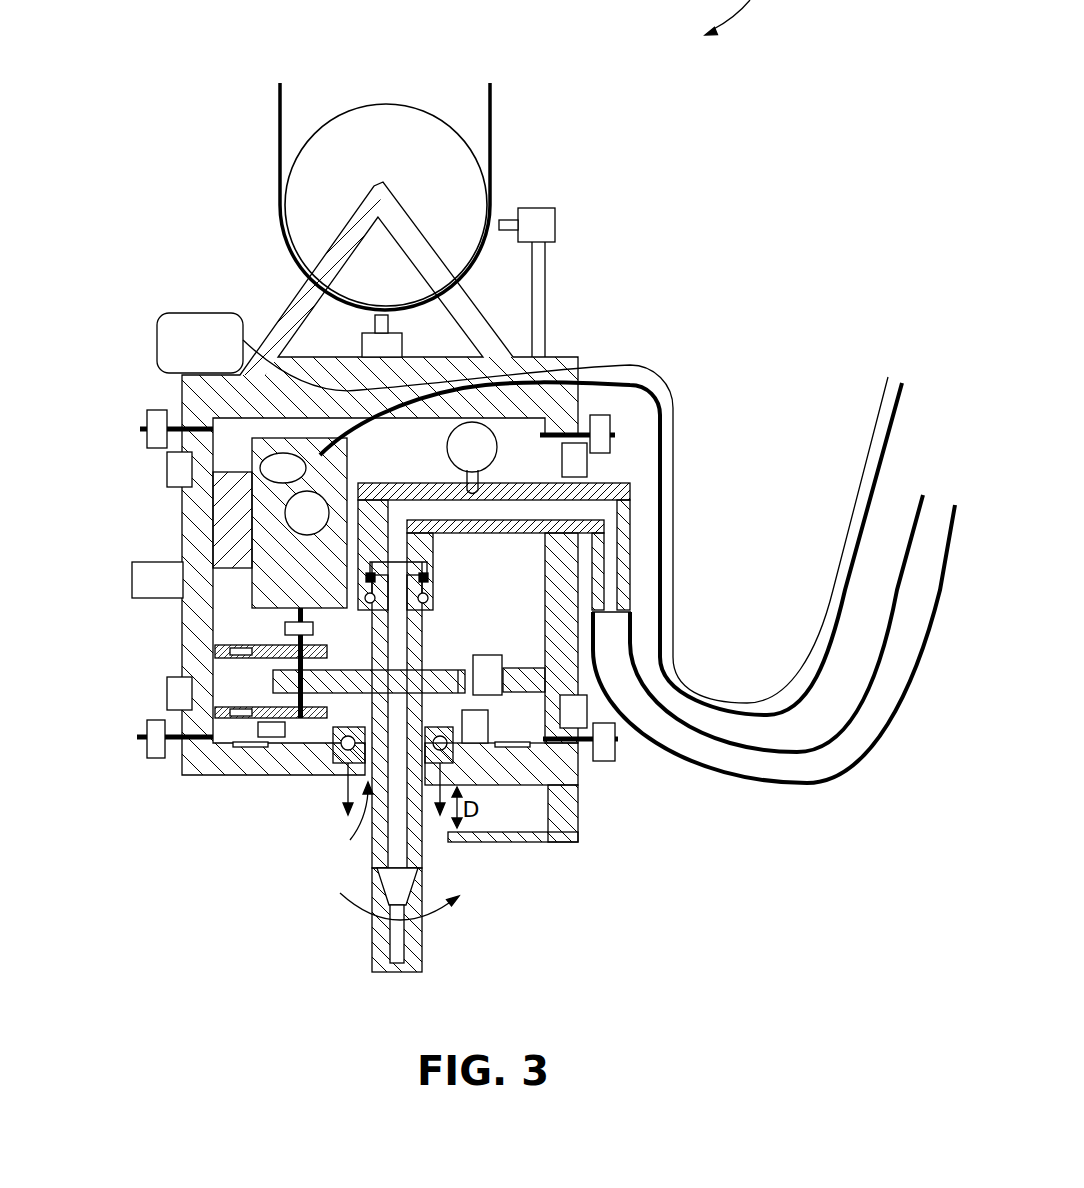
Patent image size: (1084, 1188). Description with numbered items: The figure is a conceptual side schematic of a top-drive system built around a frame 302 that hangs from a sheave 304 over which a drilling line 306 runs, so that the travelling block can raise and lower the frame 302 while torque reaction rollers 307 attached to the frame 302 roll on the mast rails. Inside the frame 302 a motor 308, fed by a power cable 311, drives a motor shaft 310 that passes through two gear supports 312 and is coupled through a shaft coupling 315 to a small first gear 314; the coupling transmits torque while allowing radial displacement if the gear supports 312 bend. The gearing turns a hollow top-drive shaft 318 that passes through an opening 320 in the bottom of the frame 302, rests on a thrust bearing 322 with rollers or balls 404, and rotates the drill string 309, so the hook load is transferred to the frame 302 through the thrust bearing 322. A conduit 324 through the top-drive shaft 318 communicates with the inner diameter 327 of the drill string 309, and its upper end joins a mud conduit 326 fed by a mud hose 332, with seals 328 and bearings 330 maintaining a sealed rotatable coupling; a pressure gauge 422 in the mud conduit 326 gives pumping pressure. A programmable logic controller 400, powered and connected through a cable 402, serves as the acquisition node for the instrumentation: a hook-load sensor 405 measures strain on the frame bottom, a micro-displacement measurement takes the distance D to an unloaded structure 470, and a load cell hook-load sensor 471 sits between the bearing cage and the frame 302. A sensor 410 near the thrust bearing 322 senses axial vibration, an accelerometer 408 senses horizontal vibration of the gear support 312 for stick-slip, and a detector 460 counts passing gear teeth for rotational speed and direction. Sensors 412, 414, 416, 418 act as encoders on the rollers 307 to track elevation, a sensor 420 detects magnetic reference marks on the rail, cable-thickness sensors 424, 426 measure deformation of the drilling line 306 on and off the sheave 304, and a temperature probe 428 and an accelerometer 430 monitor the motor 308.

The frame 302 is at (580, 356).
The sheave 304 is at (384, 116).
The drilling line 306 is at (493, 97).
The torque reaction rollers 307 is at (147, 411).
The motor 308 is at (313, 590).
The drill string 309 is at (423, 959).
The motor shaft 310 is at (273, 681).
The power cable 311 is at (884, 457).
The gear supports 312 is at (216, 642).
The first gear 314 is at (232, 747).
The shaft coupling 315 is at (284, 628).
The top-drive shaft 318 is at (423, 843).
The opening 320 is at (372, 795).
The thrust bearing 322 is at (342, 728).
The conduit 324 is at (402, 641).
The mud conduit 326 is at (400, 483).
The inner diameter 327 is at (402, 936).
The seals 328 is at (433, 580).
The bearings 330 is at (430, 599).
The mud hose 332 is at (799, 786).
The programmable logic controller 400 is at (190, 313).
The cable 402 is at (674, 393).
The rollers or balls 404 is at (470, 779).
The hook-load sensor 405 is at (541, 790).
The accelerometer 408 is at (272, 738).
The sensor 410 is at (488, 728).
The sensor 412 is at (166, 468).
The sensor 414 is at (166, 689).
The sensor 416 is at (588, 466).
The sensor 418 is at (588, 710).
The sensor 420 is at (131, 570).
The pressure gauge 422 is at (497, 448).
The cable-thickness sensor 424 is at (402, 345).
The cable-thickness sensor 426 is at (556, 226).
The temperature probe 428 is at (293, 523).
The accelerometer 430 is at (307, 478).
The detector 460 is at (502, 660).
The structure 470 is at (515, 838).
The hook-load sensor 471 is at (340, 787).